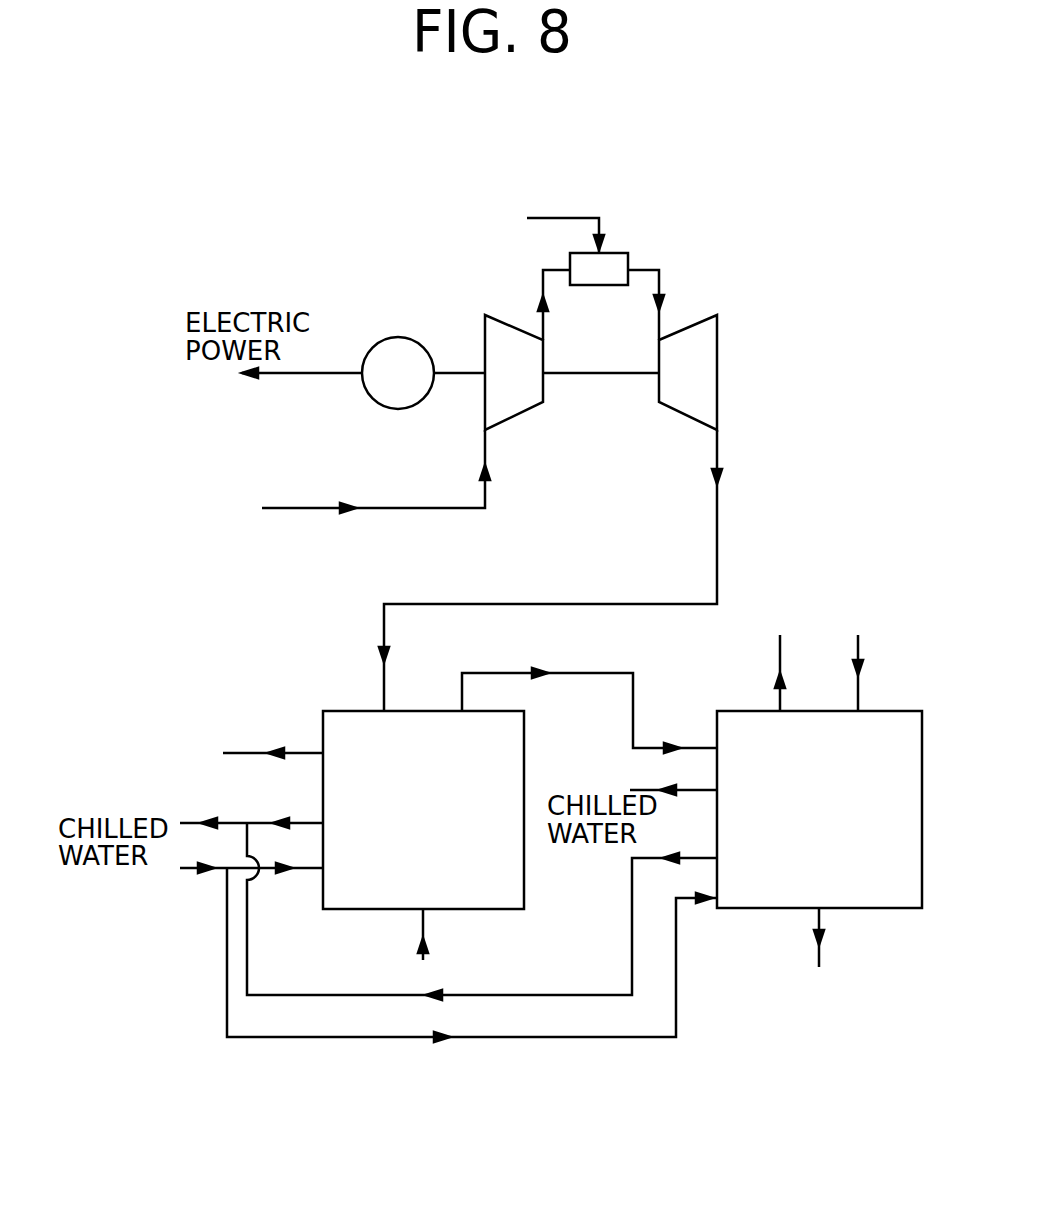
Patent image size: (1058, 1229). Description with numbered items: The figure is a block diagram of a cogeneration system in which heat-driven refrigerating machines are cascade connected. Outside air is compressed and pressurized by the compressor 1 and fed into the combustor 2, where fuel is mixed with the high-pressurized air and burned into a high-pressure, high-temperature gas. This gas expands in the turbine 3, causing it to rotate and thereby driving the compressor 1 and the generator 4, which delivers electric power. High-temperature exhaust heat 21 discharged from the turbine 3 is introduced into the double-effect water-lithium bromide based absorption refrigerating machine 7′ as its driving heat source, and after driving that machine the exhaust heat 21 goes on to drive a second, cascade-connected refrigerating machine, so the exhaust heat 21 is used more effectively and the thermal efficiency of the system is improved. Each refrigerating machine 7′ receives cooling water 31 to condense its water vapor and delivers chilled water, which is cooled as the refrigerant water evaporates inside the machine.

The compressor 1 is at (504, 324).
The combustor 2 is at (615, 252).
The turbine 3 is at (717, 340).
The generator 4 is at (398, 337).
The exhaust heat 21 is at (717, 518).
The double-effect water-lithium bromide based absorption refrigerating machine 7' is at (622, 863).
The cooling water 31 is at (303, 752).